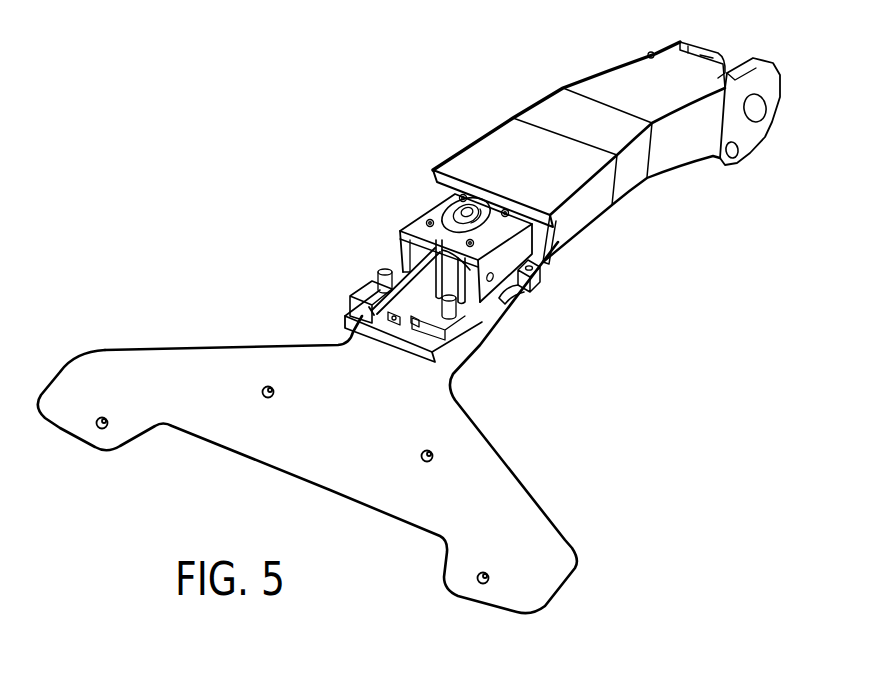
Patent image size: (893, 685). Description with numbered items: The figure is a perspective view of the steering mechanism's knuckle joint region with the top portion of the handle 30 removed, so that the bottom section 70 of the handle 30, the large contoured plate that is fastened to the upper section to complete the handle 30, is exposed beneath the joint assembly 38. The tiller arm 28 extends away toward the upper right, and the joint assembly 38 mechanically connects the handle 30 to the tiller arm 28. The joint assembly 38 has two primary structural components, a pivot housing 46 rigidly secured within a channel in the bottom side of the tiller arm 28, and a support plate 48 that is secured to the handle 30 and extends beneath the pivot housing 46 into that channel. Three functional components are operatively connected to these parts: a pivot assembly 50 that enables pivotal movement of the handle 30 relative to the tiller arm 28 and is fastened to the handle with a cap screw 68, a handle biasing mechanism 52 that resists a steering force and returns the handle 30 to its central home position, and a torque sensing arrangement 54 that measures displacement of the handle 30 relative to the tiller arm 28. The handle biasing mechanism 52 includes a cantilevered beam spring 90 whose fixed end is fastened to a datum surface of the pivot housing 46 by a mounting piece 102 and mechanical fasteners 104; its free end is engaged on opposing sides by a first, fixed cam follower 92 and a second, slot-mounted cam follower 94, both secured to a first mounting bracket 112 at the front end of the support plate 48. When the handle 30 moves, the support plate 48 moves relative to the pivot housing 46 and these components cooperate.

The tiller arm 28 is at (616, 62).
The handle 30 is at (307, 427).
The joint assembly 38 is at (352, 306).
The pivot housing 46 is at (548, 257).
The support plate 48 is at (505, 298).
The pivot assembly 50 is at (436, 224).
The handle biasing mechanism 52 is at (355, 290).
The torque sensing arrangement 54 is at (442, 142).
The cap screw 68 is at (482, 211).
The bottom section 70 is at (121, 338).
The cantilevered beam spring 90 is at (405, 266).
The first cam follower 92 is at (372, 318).
The second cam follower 94 is at (387, 326).
The mounting piece 102 is at (436, 268).
The mechanical fasteners 104 is at (470, 270).
The first mounting bracket 112 is at (415, 330).